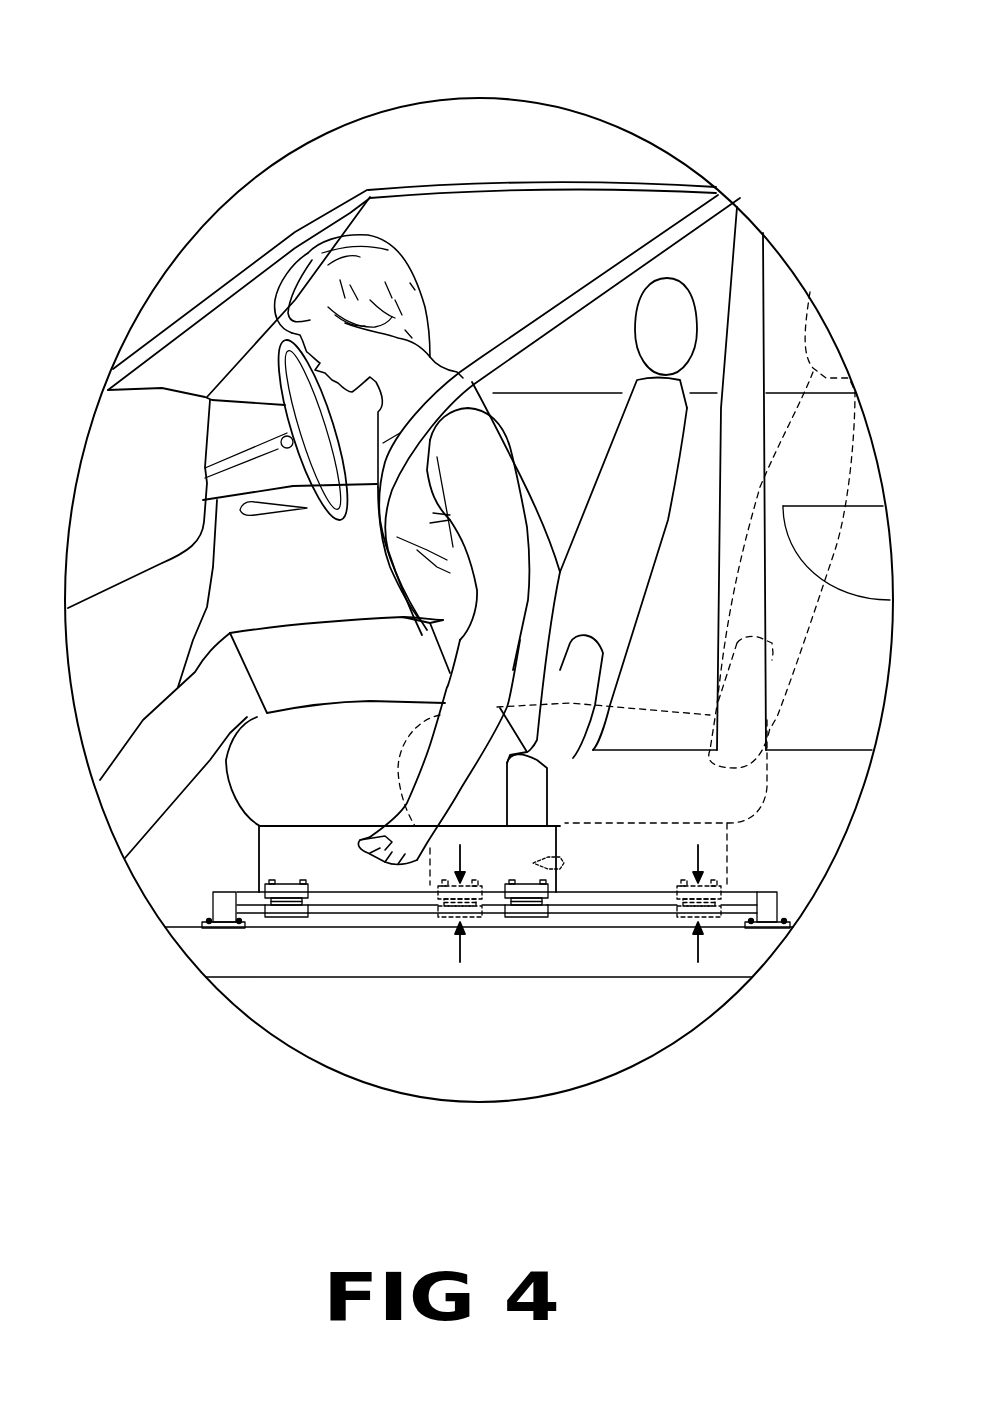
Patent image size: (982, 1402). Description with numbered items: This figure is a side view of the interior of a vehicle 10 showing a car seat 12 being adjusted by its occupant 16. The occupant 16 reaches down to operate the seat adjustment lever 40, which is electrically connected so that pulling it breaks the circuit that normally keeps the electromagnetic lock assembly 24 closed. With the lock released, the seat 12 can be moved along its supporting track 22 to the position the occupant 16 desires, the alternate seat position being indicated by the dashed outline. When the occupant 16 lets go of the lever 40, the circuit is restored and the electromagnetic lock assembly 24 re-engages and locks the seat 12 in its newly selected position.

The vehicle 10 is at (452, 145).
The car seat 12 is at (667, 312).
The occupant 16 is at (345, 265).
The seat track rail 22 is at (645, 900).
The electromagnetic lock assembly 24 is at (547, 913).
The seat adjustment lever 40 is at (363, 843).